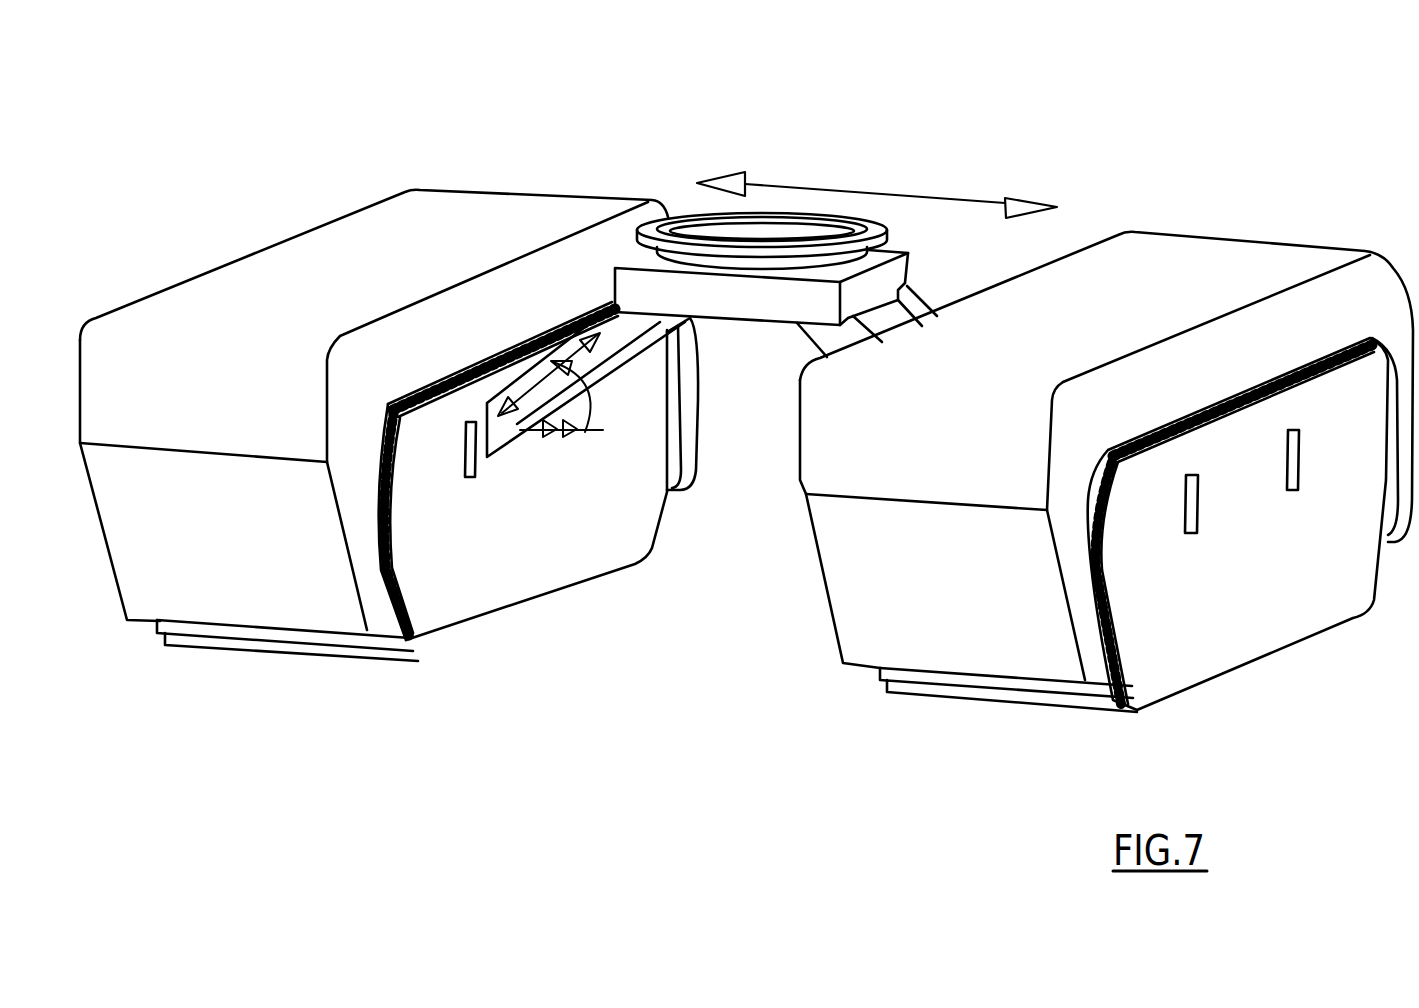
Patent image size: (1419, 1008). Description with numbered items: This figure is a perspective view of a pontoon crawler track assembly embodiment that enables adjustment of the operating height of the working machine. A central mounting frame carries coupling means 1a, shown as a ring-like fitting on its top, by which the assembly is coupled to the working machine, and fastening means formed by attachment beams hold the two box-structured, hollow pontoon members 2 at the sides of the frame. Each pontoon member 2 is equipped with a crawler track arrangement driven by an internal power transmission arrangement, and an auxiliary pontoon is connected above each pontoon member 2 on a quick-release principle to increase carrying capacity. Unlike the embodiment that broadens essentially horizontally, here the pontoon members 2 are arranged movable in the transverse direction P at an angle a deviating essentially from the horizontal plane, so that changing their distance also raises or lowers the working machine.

The coupling means 1a is at (688, 216).
The pontoon member 2 is at (475, 645).
The angle a is at (583, 430).
The transverse direction P is at (877, 185).